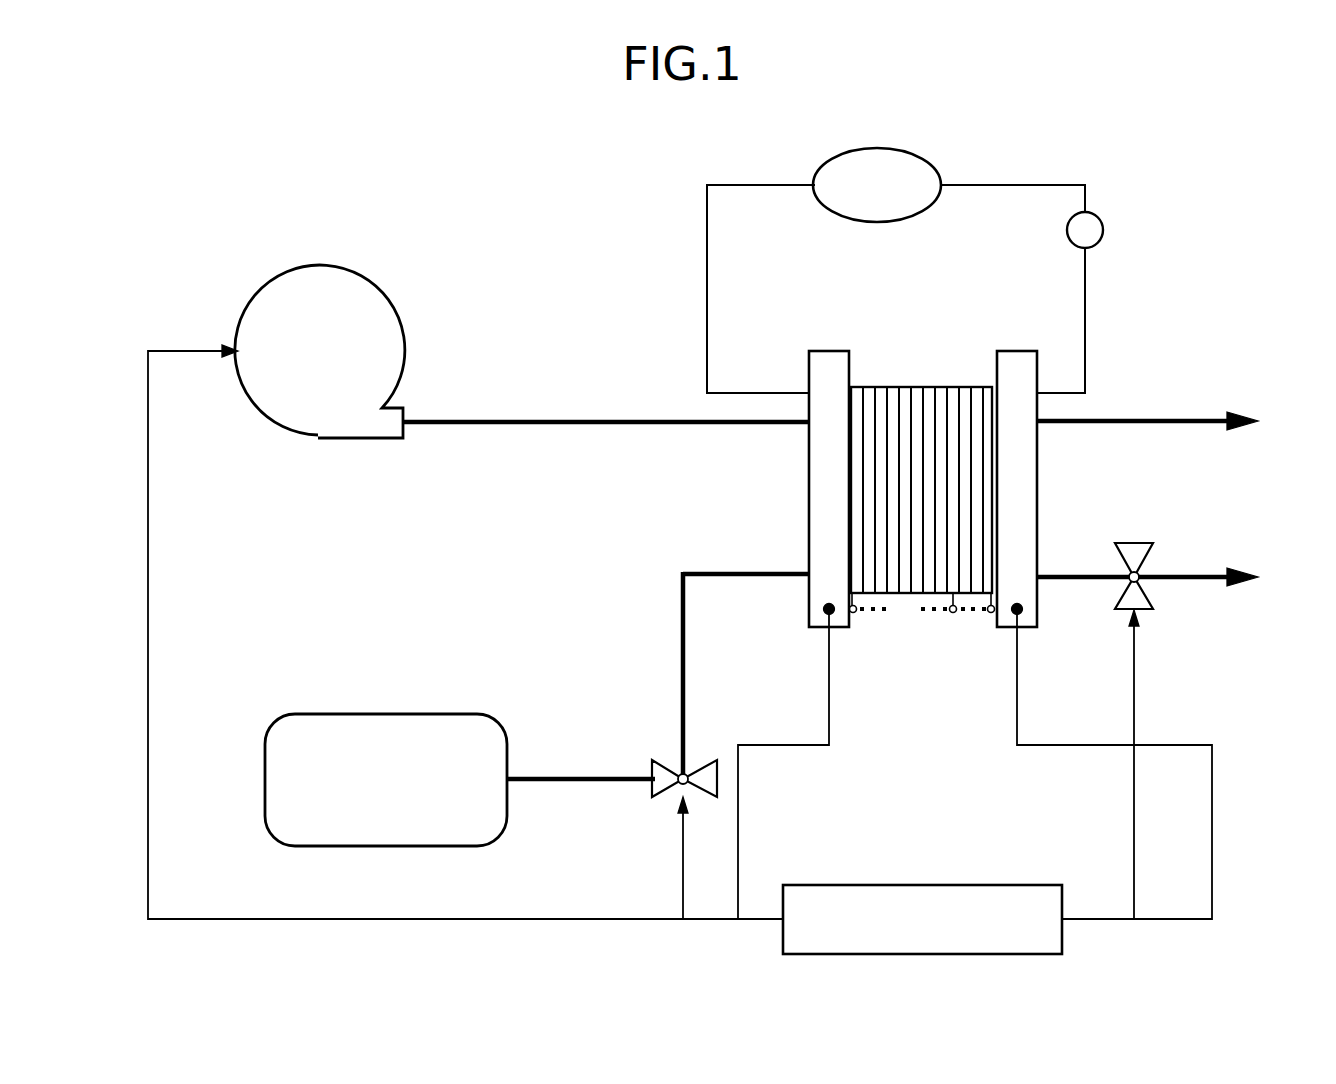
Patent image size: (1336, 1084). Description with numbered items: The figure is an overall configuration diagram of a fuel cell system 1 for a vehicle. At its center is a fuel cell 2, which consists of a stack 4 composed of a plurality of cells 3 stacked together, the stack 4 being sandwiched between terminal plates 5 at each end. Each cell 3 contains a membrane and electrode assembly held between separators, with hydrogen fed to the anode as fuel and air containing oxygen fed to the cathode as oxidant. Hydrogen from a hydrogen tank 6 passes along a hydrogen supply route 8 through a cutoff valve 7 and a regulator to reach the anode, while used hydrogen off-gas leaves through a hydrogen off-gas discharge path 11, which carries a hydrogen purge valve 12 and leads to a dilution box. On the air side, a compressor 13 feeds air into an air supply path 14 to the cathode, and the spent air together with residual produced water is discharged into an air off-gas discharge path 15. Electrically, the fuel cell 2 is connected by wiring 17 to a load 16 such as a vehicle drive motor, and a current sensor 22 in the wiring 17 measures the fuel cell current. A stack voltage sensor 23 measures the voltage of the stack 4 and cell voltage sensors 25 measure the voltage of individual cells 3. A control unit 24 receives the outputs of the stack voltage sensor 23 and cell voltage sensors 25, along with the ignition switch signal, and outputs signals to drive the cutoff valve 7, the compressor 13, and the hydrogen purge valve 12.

The fuel cell system 1 is at (1188, 314).
The fuel cell 2 is at (923, 487).
The cells 3 is at (992, 320).
The stack 4 is at (921, 431).
The terminal plates 5 is at (829, 350).
The hydrogen tank 6 is at (388, 713).
The cutoff valve 7 is at (664, 762).
The hydrogen supply route 8 is at (574, 777).
The hydrogen off-gas discharge path 11 is at (1184, 575).
The hydrogen purge valve 12 is at (1130, 542).
The compressor 13 is at (323, 263).
The air supply path 14 is at (574, 420).
The air off-gas discharge path 15 is at (1185, 418).
The load 16 is at (929, 162).
The wiring 17 is at (1031, 184).
The current sensor 22 is at (1104, 230).
The stack voltage sensor 23 is at (826, 612).
The control unit 24 is at (924, 884).
The cell voltage sensors 25 is at (905, 610).